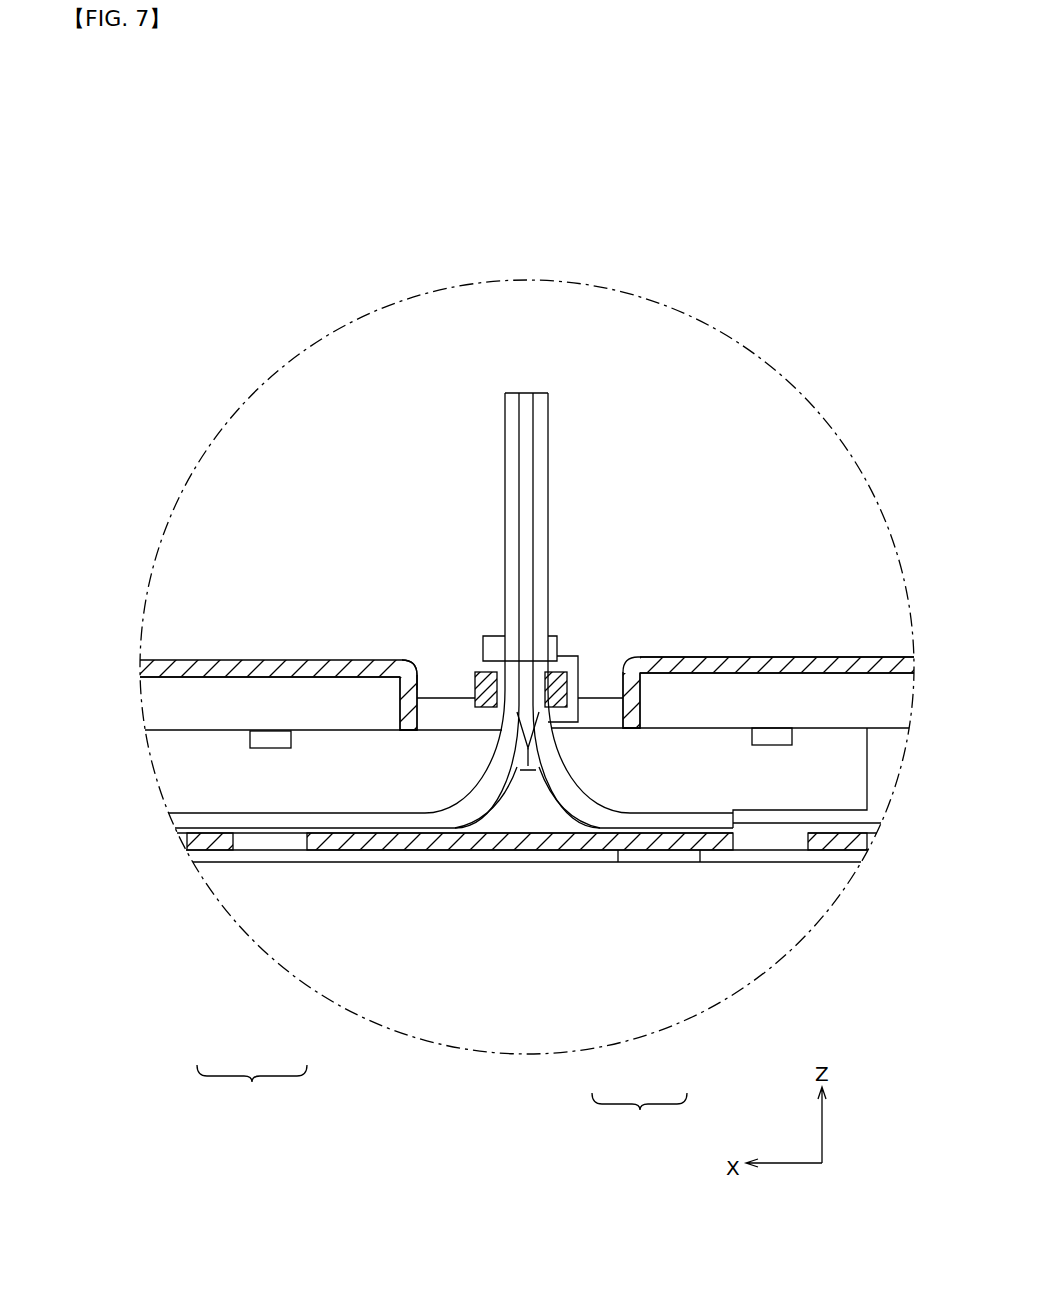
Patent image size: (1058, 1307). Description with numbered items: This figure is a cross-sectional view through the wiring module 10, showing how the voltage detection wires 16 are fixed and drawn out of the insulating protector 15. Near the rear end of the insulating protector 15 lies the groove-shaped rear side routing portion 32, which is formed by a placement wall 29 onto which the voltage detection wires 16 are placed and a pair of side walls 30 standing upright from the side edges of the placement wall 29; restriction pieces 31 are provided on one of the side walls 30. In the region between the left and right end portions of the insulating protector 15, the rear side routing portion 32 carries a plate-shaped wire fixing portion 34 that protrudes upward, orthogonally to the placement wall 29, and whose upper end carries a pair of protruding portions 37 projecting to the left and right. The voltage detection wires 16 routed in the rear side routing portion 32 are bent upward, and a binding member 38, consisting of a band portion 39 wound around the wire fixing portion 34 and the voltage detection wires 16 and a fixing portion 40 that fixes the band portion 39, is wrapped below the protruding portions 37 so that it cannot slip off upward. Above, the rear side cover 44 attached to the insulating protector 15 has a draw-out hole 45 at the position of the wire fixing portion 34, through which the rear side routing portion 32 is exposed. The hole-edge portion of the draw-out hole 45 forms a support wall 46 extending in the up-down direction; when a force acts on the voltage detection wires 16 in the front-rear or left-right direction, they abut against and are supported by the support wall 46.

The wiring module 10 is at (223, 540).
The insulating protector 15 is at (183, 775).
The voltage detection wire 16 is at (543, 403).
The placement wall 29 is at (350, 842).
The side wall 30 is at (237, 792).
The restriction piece 31 is at (268, 733).
The rear side routing portion 32 is at (252, 1090).
The wire fixing portion 34 is at (527, 748).
The protruding portion 37 is at (483, 645).
The binding member 38 is at (639, 1117).
The band portion 39 is at (578, 705).
The fixing portion 40 is at (573, 685).
The rear side cover 44 is at (762, 657).
The draw-out hole 45 is at (416, 662).
The support wall 46 is at (400, 703).